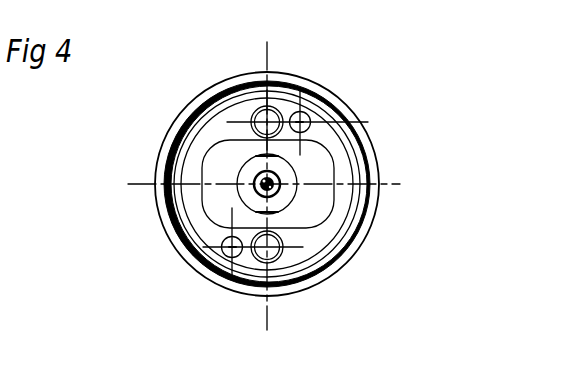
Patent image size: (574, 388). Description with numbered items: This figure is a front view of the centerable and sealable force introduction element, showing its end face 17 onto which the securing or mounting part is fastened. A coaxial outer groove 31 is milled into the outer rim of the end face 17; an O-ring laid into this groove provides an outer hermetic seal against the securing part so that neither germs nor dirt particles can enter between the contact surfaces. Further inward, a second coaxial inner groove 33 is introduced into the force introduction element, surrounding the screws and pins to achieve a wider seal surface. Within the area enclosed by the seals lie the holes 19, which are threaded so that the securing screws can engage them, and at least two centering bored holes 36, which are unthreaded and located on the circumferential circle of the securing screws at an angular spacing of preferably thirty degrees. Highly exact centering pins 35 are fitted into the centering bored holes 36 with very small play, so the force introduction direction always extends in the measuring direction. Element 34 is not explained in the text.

The end face 17 is at (203, 165).
The threaded holes 19 is at (260, 263).
The coaxial outer groove 31 is at (340, 262).
The second coaxial inner groove 33 is at (302, 266).
The inner ring 34 is at (350, 213).
The centering pins 35 is at (307, 122).
The centering bored holes 36 is at (222, 265).